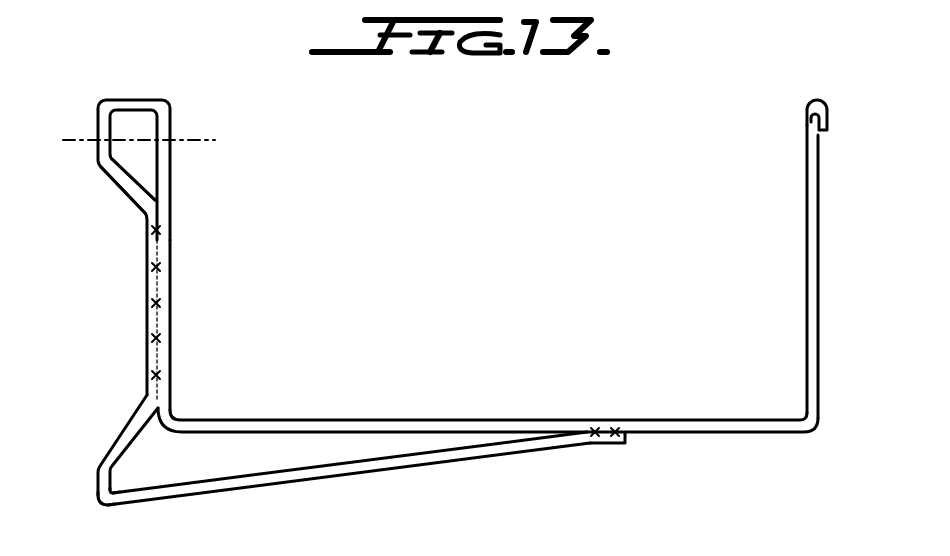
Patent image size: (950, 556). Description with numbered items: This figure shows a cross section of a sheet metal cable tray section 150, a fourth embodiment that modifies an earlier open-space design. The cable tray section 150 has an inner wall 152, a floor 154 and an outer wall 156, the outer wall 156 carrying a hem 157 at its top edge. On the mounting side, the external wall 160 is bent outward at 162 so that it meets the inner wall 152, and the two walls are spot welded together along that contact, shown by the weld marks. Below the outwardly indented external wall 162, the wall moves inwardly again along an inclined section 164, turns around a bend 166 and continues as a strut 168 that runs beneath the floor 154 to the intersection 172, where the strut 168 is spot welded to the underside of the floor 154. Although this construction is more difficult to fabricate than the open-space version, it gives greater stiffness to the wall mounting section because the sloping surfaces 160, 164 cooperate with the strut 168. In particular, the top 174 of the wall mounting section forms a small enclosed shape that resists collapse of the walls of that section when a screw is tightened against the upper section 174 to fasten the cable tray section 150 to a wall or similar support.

The cable tray section 150 is at (422, 305).
The inner wall 152 is at (170, 290).
The floor 154 is at (477, 385).
The outer wall 156 is at (806, 230).
The hem 157 is at (829, 118).
The external wall 160 is at (127, 200).
The outwardly indented external wall 162 is at (147, 297).
The inclined section 164 is at (127, 428).
The bend 166 is at (93, 497).
The strut 168 is at (250, 488).
The intersection 172 is at (608, 445).
The top of the wall mounting section 174 is at (158, 77).